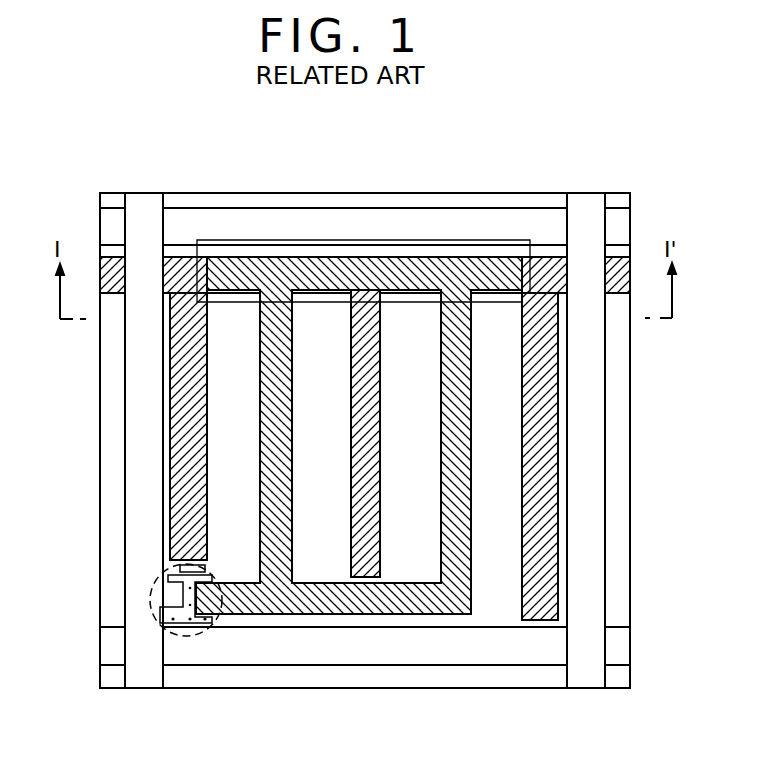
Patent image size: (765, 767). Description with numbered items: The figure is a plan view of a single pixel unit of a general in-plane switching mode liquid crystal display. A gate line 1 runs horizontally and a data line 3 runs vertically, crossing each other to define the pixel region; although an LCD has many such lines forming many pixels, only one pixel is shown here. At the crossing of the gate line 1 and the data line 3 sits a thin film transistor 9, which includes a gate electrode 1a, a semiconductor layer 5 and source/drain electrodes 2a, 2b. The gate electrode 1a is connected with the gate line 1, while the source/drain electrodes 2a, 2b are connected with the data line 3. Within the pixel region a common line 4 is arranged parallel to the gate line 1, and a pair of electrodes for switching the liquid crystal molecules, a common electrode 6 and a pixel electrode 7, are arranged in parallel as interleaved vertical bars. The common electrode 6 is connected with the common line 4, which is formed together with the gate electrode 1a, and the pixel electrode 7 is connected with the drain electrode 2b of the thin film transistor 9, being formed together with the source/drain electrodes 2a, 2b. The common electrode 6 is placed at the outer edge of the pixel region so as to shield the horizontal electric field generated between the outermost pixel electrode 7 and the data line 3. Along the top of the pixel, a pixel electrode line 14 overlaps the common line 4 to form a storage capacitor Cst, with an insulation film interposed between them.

The gate line 1 is at (440, 650).
The gate electrode 1a is at (183, 563).
The source electrode 2a is at (167, 592).
The drain electrode 2b is at (210, 617).
The data line 3 is at (140, 673).
The common line 4 is at (113, 267).
The semiconductor layer 5 is at (187, 623).
The common electrode 6 is at (190, 323).
The pixel electrode 7 is at (275, 317).
The thin film transistor 9 is at (159, 622).
The pixel electrode line 14 is at (502, 277).
The storage capacitor Cst is at (408, 240).